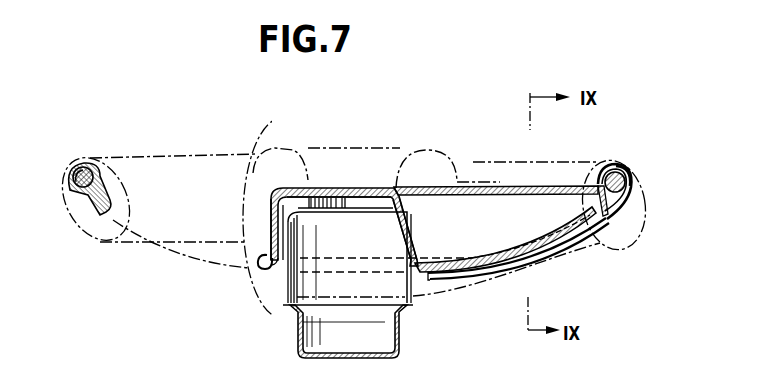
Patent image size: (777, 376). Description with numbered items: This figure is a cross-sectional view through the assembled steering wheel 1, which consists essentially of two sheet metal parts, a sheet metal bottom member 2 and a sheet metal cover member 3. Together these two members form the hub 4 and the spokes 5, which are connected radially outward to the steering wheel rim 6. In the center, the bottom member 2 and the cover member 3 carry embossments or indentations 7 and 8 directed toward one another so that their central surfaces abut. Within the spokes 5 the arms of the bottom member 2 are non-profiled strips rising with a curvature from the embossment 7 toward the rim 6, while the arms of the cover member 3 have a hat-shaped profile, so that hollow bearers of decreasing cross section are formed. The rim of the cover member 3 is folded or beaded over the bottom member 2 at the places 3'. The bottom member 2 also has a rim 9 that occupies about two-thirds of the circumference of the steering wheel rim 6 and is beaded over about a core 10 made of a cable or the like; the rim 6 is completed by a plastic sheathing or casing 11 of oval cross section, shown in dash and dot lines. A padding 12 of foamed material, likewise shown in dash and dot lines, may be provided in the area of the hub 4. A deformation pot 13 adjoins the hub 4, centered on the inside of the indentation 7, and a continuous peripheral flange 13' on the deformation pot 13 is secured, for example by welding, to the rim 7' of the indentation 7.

The steering wheel 1 is at (186, 153).
The sheet metal bottom member 2 is at (533, 245).
The sheet metal cover member 3 is at (496, 159).
The beaded-over places 3' is at (244, 273).
The hub 4 is at (425, 244).
The spokes 5 is at (528, 212).
The steering wheel rim 6 is at (610, 155).
The embossment 7 is at (433, 230).
The rim of the indentation 7' is at (264, 229).
The embossment 8 is at (389, 196).
The rim 9 is at (72, 178).
The core 10 is at (634, 177).
The sheathing 11 is at (620, 226).
The padding 12 is at (263, 163).
The deformation pot 13 is at (328, 334).
The flange 13' is at (346, 272).